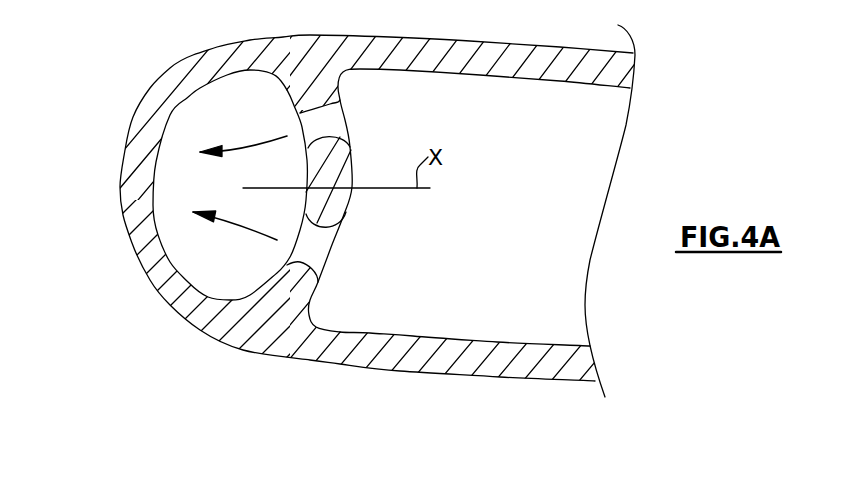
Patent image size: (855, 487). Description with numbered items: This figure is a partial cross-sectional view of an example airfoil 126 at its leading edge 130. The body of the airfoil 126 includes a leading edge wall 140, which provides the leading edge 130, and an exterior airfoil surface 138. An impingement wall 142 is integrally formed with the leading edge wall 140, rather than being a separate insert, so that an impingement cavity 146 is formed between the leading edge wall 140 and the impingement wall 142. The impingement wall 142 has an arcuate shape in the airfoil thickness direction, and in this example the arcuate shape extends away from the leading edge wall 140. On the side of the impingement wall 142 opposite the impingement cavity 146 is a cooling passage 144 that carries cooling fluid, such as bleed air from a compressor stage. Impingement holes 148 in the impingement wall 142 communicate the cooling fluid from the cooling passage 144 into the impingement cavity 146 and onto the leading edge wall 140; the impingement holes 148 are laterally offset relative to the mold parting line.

The airfoil 126 is at (175, 342).
The leading edge 130 is at (122, 197).
The exterior airfoil surface 138 is at (333, 366).
The leading edge wall 140 is at (167, 267).
The impingement wall 142 is at (335, 203).
The cooling passage 144 is at (540, 273).
The impingement cavity 146 is at (265, 121).
The impingement holes 148 is at (333, 120).